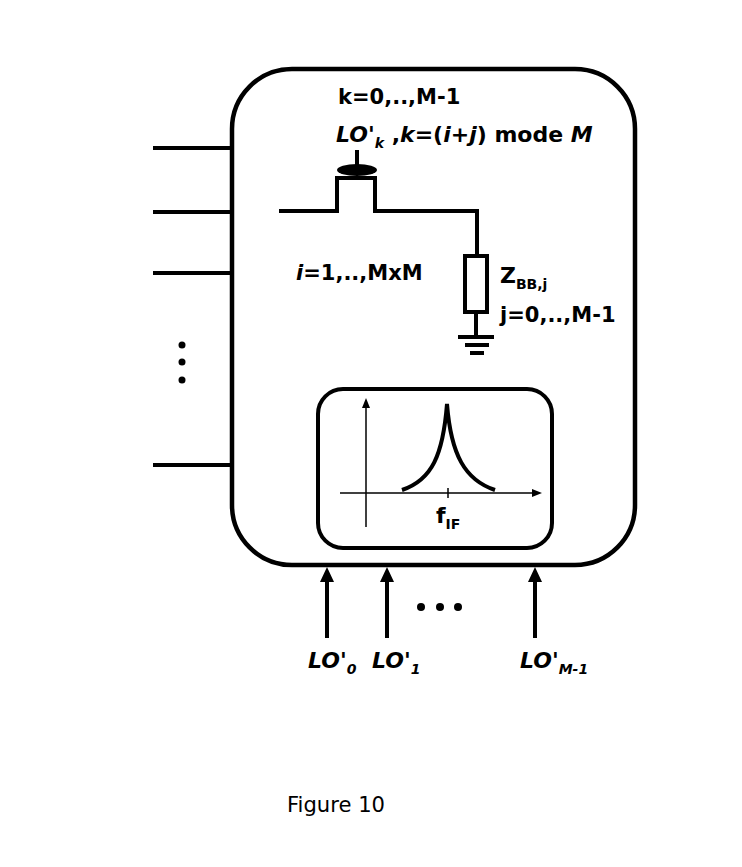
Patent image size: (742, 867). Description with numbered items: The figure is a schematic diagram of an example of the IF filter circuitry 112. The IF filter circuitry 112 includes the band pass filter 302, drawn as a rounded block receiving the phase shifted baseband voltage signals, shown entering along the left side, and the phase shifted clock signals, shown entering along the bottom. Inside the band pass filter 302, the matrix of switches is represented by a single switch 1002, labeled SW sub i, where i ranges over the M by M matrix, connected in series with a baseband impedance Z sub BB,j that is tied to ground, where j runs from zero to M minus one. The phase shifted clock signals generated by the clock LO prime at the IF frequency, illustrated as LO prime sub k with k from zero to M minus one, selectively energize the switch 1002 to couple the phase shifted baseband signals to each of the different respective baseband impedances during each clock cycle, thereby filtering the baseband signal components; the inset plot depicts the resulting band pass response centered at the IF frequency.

The IF filter circuitry 112 is at (193, 63).
The band pass filter 302 is at (633, 102).
The switch 1002 is at (338, 210).